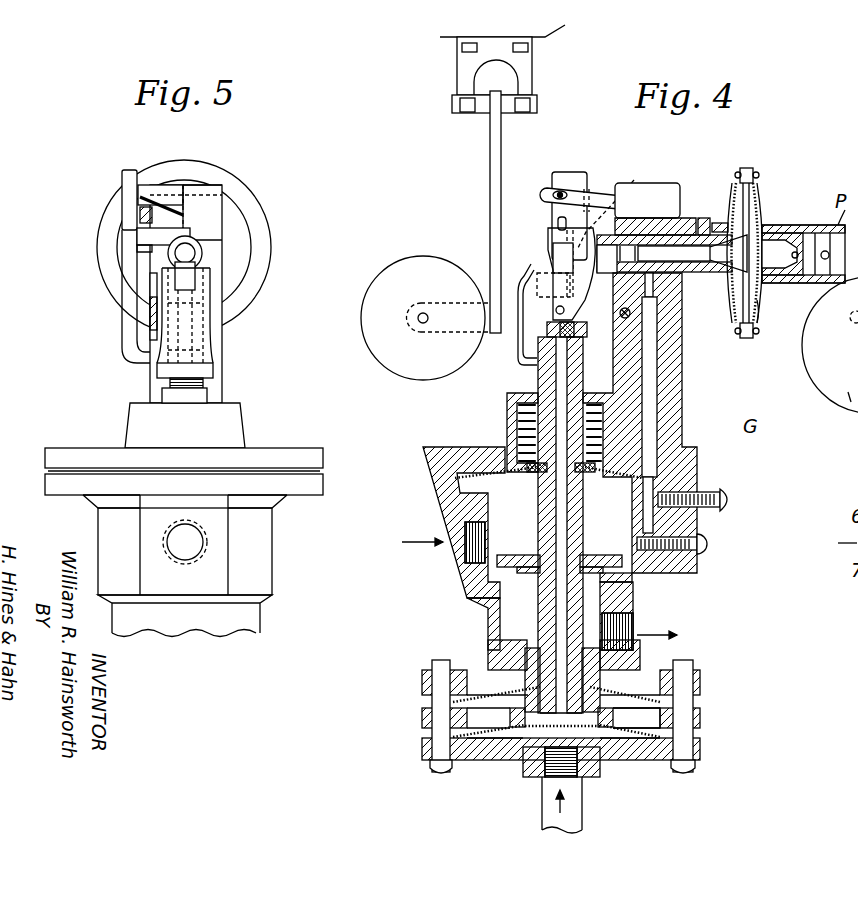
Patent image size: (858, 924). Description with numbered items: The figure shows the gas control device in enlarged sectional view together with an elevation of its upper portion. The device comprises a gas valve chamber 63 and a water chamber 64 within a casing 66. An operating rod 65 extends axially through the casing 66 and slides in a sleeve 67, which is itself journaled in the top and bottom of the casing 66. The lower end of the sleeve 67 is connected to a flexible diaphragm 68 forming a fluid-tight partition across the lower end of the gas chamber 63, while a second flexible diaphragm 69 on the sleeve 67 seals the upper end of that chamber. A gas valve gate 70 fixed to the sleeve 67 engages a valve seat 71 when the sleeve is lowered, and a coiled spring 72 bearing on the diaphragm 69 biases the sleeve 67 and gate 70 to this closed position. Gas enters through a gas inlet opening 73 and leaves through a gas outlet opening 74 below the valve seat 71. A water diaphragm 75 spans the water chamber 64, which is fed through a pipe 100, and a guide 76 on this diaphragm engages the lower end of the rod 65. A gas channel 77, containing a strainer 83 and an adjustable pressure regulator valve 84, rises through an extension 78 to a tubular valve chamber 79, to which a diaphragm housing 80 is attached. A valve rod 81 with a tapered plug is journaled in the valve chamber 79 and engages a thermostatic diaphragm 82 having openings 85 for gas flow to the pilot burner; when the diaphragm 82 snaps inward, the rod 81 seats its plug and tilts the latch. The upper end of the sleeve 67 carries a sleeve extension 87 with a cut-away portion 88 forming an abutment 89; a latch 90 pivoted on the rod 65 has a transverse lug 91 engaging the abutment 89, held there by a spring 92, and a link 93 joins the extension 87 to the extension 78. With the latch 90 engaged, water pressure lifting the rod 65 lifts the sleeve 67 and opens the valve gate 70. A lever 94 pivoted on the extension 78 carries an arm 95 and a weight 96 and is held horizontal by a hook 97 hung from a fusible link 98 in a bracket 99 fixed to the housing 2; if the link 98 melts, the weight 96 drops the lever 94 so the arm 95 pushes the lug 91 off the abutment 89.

In FIG. 4, the housing 2 is at (511, 24).
In FIG. 4, the gas valve chamber 63 is at (498, 495).
In FIG. 4, the water chamber 64 is at (597, 740).
In FIG. 4, the operating rod 65 is at (560, 720).
In FIG. 5, the casing 66 is at (245, 617).
In FIG. 4, the casing 66 is at (488, 627).
In FIG. 5, the sleeve 67 is at (200, 383).
In FIG. 4, the sleeve 67 is at (573, 518).
In FIG. 4, the flexible diaphragm 68 is at (637, 695).
In FIG. 4, the second flexible diaphragm 69 is at (490, 472).
In FIG. 4, the gas valve gate 70 is at (510, 553).
In FIG. 4, the valve seat 71 is at (617, 580).
In FIG. 4, the coiled spring 72 is at (658, 408).
In FIG. 5, the gas inlet opening 73 is at (193, 540).
In FIG. 4, the gas inlet opening 73 is at (462, 548).
In FIG. 4, the gas outlet opening 74 is at (633, 627).
In FIG. 4, the water diaphragm 75 is at (633, 733).
In FIG. 4, the guide 76 is at (527, 737).
In FIG. 4, the gas channel 77 is at (650, 427).
In FIG. 5, the extension 78 is at (222, 282).
In FIG. 4, the extension 78 is at (667, 372).
In FIG. 5, the tubular valve chamber 79 is at (193, 245).
In FIG. 4, the tubular valve chamber 79 is at (693, 220).
In FIG. 5, the diaphragm housing 80 is at (240, 185).
In FIG. 4, the diaphragm housing 80 is at (755, 193).
In FIG. 5, the valve rod 81 is at (193, 255).
In FIG. 4, the valve rod 81 is at (697, 257).
In FIG. 4, the thermostatic diaphragm 82 is at (767, 227).
In FIG. 4, the strainer 83 is at (697, 568).
In FIG. 4, the adjustable pressure regulator valve 84 is at (658, 497).
In FIG. 4, the openings 85 is at (763, 297).
In FIG. 5, the sleeve extension 87 is at (128, 163).
In FIG. 4, the sleeve extension 87 is at (573, 177).
In FIG. 5, the cut-away portion 88 is at (128, 237).
In FIG. 4, the cut-away portion 88 is at (552, 247).
In FIG. 5, the abutment 89 is at (140, 215).
In FIG. 4, the abutment 89 is at (558, 217).
In FIG. 5, the latch 90 is at (197, 233).
In FIG. 4, the latch 90 is at (540, 296).
In FIG. 5, the transverse lug 91 is at (140, 240).
In FIG. 4, the transverse lug 91 is at (563, 240).
In FIG. 5, the spring 92 is at (203, 320).
In FIG. 4, the spring 92 is at (522, 365).
In FIG. 5, the link 93 is at (165, 188).
In FIG. 4, the link 93 is at (593, 190).
In FIG. 4, the lever 94 is at (600, 320).
In FIG. 5, the arm 95 is at (150, 287).
In FIG. 4, the arm 95 is at (616, 202).
In FIG. 4, the weight 96 is at (420, 257).
In FIG. 4, the strap or hook 97 is at (497, 140).
In FIG. 4, the fusible link 98 is at (538, 98).
In FIG. 4, the bracket 99 is at (523, 65).
In FIG. 4, the pipe 100 is at (573, 810).